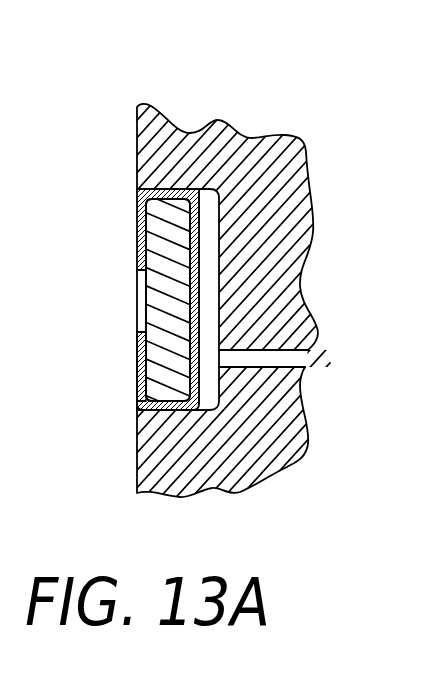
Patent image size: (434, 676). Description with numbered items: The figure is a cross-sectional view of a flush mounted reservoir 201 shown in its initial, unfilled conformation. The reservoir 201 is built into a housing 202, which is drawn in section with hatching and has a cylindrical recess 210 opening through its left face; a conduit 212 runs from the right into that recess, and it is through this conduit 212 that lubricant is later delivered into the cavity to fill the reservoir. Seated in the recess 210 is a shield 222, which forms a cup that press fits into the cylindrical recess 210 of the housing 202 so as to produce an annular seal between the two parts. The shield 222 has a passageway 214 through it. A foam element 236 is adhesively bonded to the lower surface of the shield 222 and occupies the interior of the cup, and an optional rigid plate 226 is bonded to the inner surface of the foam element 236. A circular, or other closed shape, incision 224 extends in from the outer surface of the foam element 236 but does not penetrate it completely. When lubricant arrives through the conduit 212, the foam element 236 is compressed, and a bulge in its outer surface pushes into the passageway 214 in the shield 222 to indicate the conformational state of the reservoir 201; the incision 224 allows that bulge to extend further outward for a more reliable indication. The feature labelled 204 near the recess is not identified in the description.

The reservoir 201 is at (95, 104).
The housing 202 is at (188, 128).
The recess 204 is at (220, 198).
The cylindrical recess 210 is at (208, 275).
The conduit 212 is at (280, 360).
The passageway 214 is at (182, 327).
The shield 222 is at (138, 243).
The incision 224 is at (182, 281).
The rigid plate 226 is at (202, 297).
The foam element 236 is at (162, 362).